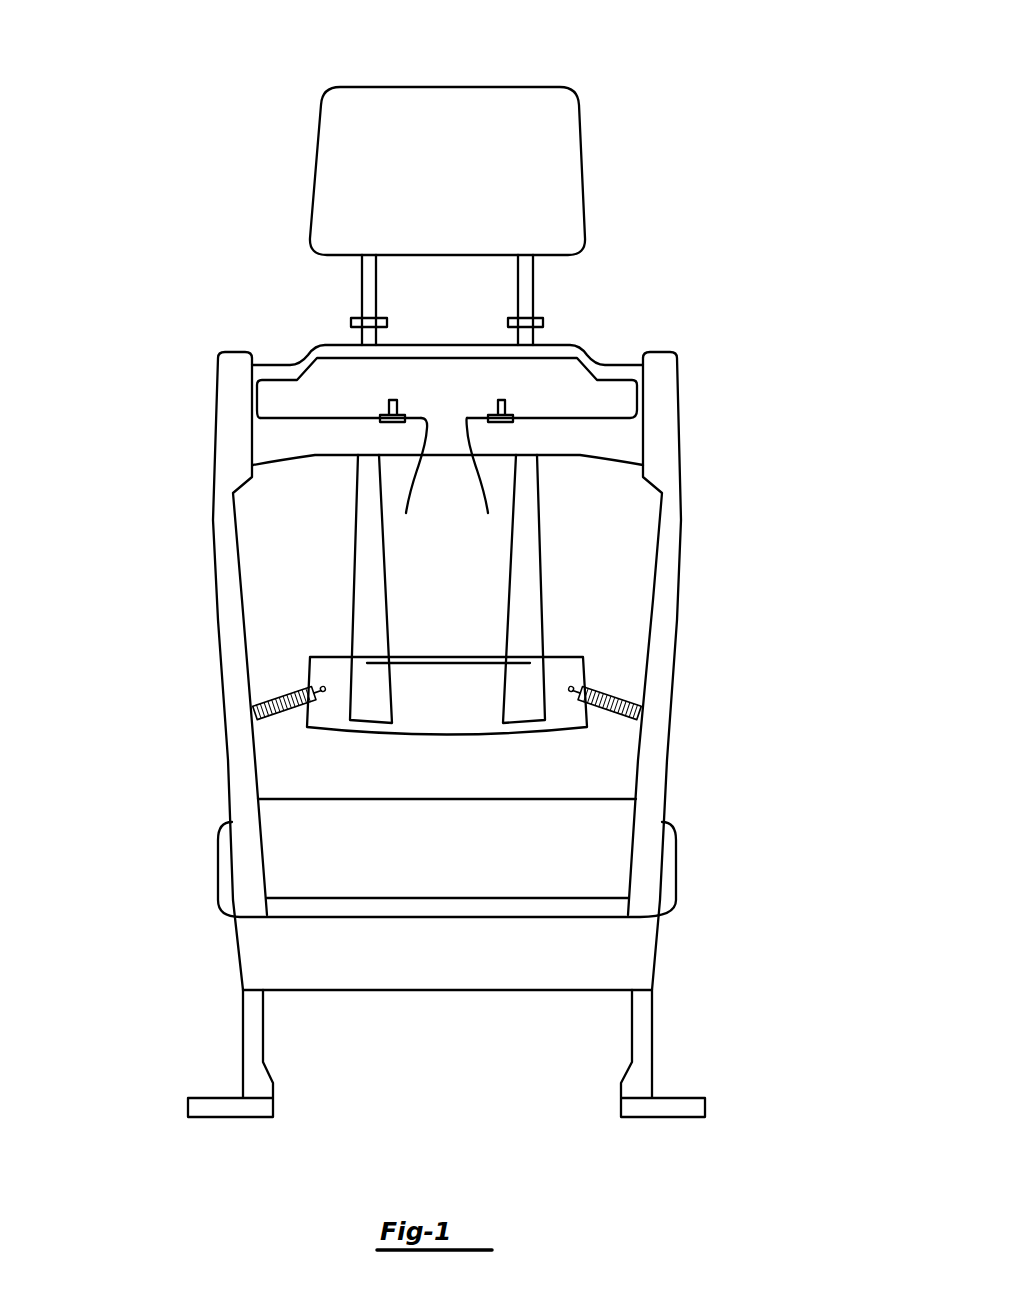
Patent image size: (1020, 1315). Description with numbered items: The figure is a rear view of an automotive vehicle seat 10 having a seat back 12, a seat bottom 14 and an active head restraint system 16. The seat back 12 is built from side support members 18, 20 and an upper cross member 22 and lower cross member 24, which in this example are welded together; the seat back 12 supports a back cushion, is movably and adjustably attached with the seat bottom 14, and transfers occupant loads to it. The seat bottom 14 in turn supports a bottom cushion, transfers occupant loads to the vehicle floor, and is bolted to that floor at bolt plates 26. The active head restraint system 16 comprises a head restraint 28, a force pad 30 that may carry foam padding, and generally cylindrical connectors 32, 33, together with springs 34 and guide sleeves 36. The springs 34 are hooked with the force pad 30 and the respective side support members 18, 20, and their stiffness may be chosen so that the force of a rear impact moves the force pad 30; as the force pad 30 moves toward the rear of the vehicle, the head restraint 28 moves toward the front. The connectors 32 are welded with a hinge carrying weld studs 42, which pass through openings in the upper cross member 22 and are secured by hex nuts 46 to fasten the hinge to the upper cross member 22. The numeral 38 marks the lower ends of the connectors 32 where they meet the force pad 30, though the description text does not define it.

The automotive vehicle seat 10 is at (707, 246).
The seat back 12 is at (224, 425).
The seat bottom 14 is at (675, 865).
The active head restraint system 16 is at (382, 87).
The side support member 18 is at (231, 643).
The side support member 20 is at (668, 641).
The upper cross member 22 is at (613, 428).
The lower cross member 24 is at (285, 845).
The bolt plates 26 is at (207, 1098).
The head restraint 28 is at (563, 188).
The force pad 30 is at (443, 684).
The connectors 32 is at (357, 582).
The connectors 33 is at (360, 300).
The springs 34 is at (256, 708).
The guide sleeves 36 is at (358, 338).
The post lower ends 38 is at (368, 679).
The weld studs 42 is at (392, 398).
The hex nuts 46 is at (450, 480).